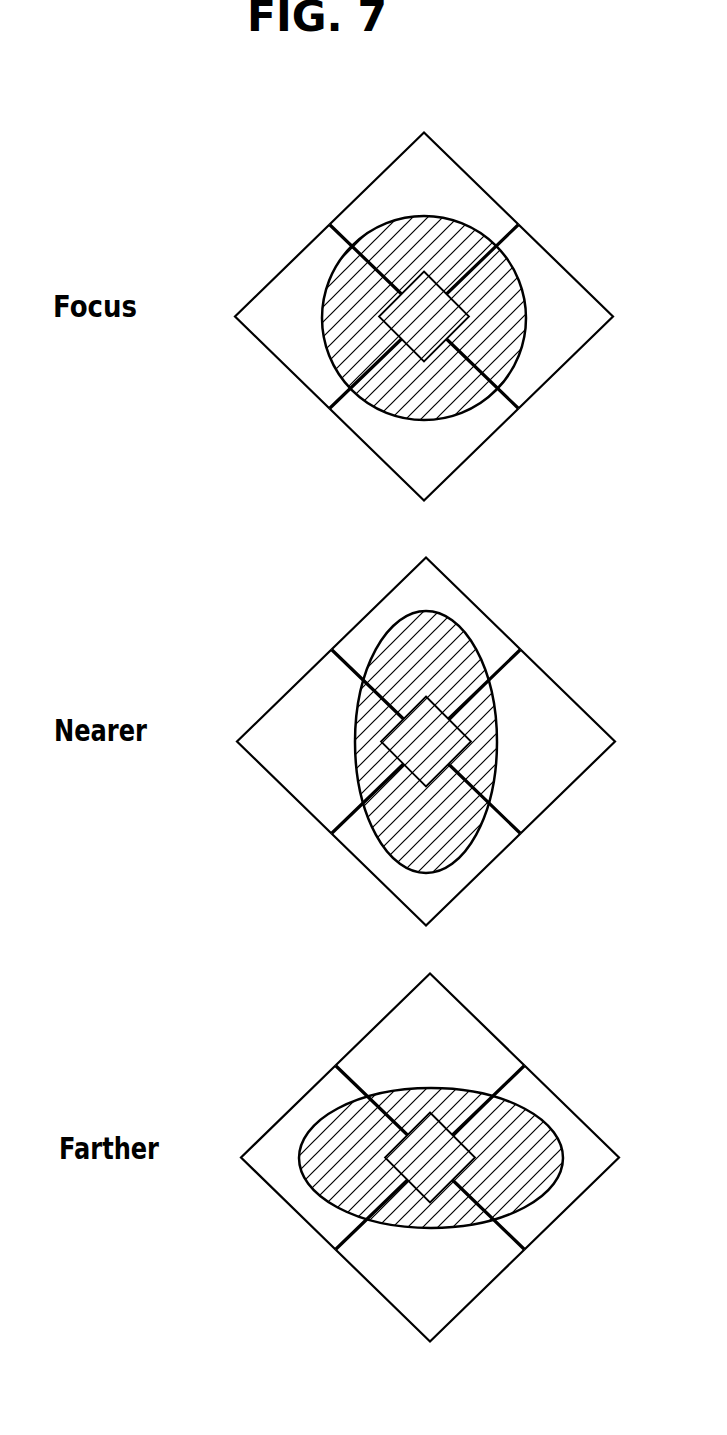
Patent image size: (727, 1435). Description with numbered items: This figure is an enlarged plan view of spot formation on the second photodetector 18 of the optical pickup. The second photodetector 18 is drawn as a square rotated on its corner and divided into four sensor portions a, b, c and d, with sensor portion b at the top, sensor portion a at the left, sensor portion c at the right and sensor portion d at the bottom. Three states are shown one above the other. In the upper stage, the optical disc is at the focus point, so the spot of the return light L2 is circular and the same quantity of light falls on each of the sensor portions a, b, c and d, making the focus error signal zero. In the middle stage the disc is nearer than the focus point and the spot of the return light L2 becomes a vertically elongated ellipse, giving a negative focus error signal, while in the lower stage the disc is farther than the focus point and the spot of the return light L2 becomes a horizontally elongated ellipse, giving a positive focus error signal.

The second photodetector 18 is at (551, 188).
The sensor portion a is at (280, 330).
The sensor portion b is at (407, 166).
The sensor portion c is at (560, 303).
The sensor portion d is at (420, 462).
The return light L2 is at (522, 335).